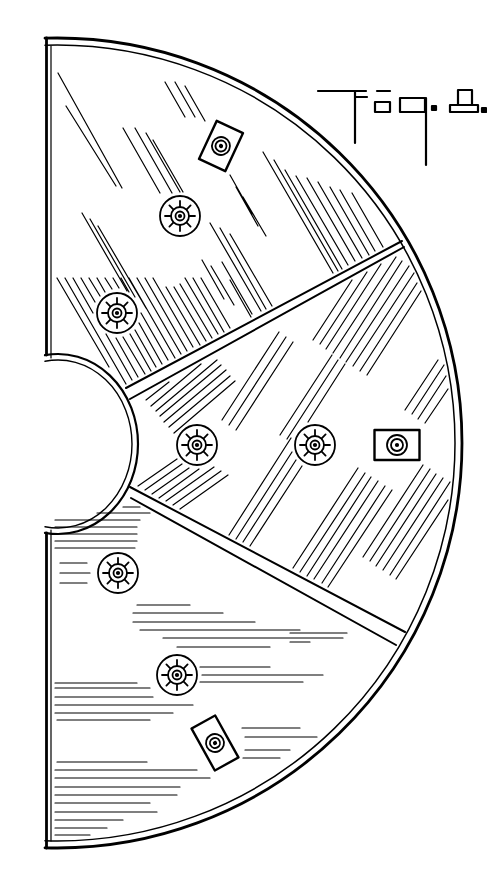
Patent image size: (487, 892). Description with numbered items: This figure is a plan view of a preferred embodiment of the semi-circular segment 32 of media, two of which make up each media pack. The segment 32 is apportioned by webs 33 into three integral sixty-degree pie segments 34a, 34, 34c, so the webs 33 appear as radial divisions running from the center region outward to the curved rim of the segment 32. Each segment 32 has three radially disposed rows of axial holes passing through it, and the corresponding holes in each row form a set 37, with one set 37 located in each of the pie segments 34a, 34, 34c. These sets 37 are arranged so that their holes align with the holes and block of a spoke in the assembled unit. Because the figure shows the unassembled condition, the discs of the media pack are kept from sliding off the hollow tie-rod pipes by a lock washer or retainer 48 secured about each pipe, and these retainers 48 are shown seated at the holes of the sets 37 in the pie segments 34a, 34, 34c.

The semi-circular segment 32 is at (355, 162).
The web 33 is at (401, 243).
The pie segment 34 is at (410, 572).
The pie segment 34a is at (350, 208).
The pie segment 34c is at (313, 713).
The set of holes 37 is at (207, 134).
The lock washer or retainer 48 is at (183, 237).